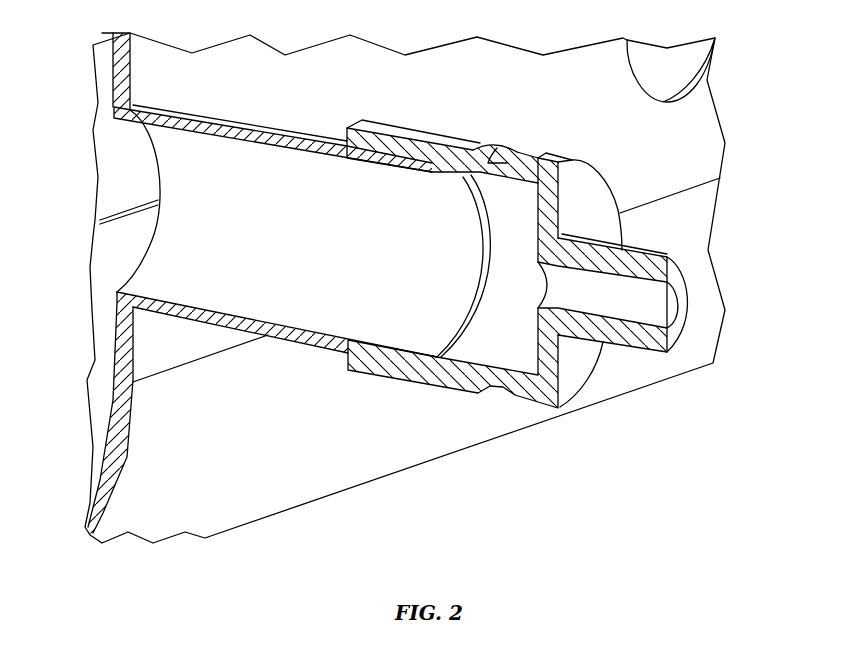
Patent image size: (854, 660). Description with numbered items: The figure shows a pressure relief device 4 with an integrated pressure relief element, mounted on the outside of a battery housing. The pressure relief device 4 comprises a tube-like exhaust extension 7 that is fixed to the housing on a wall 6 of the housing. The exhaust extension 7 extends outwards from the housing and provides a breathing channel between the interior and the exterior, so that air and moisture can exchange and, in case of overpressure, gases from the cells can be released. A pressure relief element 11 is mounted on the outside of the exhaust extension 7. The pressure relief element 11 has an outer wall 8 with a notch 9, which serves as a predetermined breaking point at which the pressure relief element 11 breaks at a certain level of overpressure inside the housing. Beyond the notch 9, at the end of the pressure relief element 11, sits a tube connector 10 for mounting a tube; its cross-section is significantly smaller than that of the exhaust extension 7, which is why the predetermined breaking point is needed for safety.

The pressure relief device 4 is at (389, 115).
The wall 6 is at (248, 488).
The exhaust extension 7 is at (232, 133).
The outer wall 8 is at (450, 147).
The notch 9 is at (500, 160).
The tube connector 10 is at (633, 347).
The pressure relief element 11 is at (500, 398).